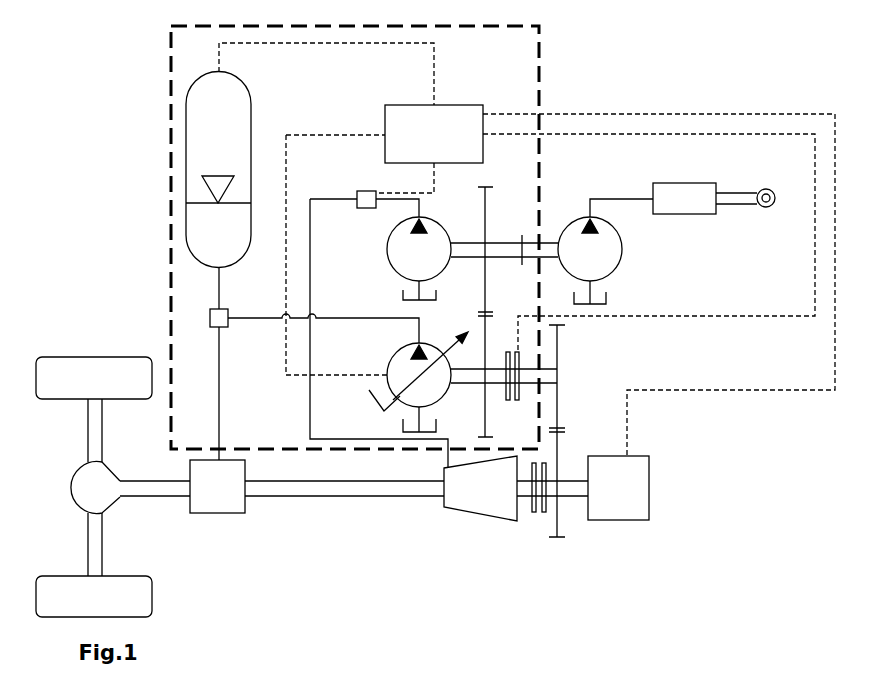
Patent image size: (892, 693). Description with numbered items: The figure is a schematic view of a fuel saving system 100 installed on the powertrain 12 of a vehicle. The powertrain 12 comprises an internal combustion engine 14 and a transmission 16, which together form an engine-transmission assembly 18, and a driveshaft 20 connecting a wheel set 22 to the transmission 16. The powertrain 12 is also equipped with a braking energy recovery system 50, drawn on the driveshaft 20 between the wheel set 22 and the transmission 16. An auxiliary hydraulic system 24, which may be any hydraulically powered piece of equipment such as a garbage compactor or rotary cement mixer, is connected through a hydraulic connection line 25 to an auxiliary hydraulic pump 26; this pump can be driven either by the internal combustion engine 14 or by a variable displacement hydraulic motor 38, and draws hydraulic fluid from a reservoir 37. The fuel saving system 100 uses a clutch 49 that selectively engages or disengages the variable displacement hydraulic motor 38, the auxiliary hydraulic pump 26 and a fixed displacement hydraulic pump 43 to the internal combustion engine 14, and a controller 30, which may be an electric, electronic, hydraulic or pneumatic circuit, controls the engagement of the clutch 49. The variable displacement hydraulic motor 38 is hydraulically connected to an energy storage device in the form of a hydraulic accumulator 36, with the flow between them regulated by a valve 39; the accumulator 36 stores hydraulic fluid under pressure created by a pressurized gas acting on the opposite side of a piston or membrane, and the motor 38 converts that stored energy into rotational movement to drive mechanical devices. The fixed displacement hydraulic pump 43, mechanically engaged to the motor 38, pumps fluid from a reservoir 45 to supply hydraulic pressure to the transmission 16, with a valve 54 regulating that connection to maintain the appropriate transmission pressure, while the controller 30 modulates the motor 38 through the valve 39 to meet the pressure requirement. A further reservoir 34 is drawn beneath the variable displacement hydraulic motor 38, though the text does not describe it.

The fuel saving system 100 is at (553, 77).
The powertrain 12 is at (363, 509).
The internal combustion engine 14 is at (649, 510).
The transmission 16 is at (446, 508).
The engine-transmission assembly 18 is at (630, 538).
The driveshaft 20 is at (338, 496).
The wheel set 22 is at (67, 575).
The auxiliary hydraulic system 24 is at (708, 214).
The hydraulic connection line 25 is at (617, 197).
The auxiliary hydraulic pump 26 is at (622, 250).
The controller 30 is at (434, 134).
The reservoir 34 is at (403, 424).
The hydraulic accumulator 36 is at (251, 125).
The reservoir 37 is at (606, 297).
The variable displacement hydraulic motor 38 is at (390, 367).
The valve 39 is at (222, 327).
The fixed displacement hydraulic pump 43 is at (390, 240).
The reservoir 45 is at (403, 299).
The clutch 49 is at (516, 400).
The braking energy recovery system 50 is at (218, 513).
The valve 54 is at (357, 191).